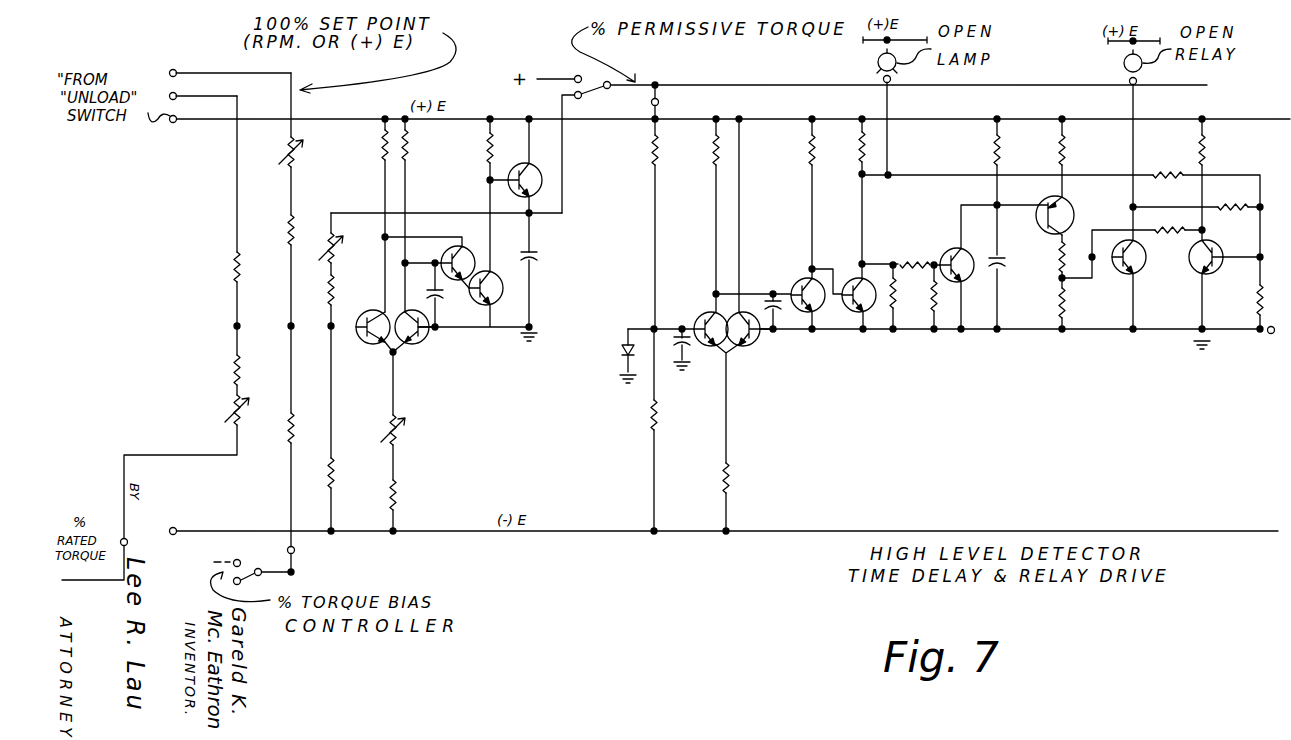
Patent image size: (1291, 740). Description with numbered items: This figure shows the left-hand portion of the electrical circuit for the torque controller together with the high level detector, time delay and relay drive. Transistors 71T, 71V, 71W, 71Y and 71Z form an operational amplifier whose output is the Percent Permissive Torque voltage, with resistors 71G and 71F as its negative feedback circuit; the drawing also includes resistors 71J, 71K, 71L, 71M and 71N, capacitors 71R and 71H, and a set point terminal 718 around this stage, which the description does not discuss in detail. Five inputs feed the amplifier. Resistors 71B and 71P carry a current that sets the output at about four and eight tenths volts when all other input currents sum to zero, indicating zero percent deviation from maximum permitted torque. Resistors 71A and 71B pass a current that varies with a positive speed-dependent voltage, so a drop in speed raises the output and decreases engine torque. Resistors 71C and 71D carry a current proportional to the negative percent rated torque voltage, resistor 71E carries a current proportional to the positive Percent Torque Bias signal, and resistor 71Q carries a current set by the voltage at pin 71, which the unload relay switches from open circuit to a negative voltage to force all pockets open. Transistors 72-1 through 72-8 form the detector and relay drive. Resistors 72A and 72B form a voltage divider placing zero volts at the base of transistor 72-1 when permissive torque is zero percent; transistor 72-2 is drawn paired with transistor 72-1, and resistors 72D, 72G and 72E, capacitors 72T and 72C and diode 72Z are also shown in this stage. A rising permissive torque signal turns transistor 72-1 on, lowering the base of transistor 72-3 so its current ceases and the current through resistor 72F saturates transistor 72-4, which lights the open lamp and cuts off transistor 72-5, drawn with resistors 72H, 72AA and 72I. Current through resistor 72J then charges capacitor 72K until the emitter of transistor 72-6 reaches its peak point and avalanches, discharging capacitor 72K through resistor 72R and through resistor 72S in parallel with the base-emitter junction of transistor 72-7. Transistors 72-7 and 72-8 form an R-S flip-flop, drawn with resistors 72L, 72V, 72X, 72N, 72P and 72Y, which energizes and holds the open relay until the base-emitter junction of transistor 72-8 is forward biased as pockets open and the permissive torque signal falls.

The set point input terminal 718 is at (180, 70).
The pin 71 is at (178, 97).
The resistor 71A is at (307, 153).
The resistor 71B is at (280, 230).
The resistor 71Q is at (234, 278).
The resistor 71D is at (232, 381).
The resistor 71C is at (230, 424).
The resistor 71E is at (275, 429).
The resistor 71G is at (365, 242).
The resistor 71F is at (354, 293).
The resistor 71P is at (352, 478).
The resistor 71J is at (373, 144).
The resistor 71K is at (410, 158).
The resistor 71L is at (480, 149).
The transistor 71Z is at (544, 187).
The transistor 71W is at (478, 247).
The transistor 71Y is at (504, 300).
The capacitor 71R is at (446, 292).
The capacitor 71H is at (540, 260).
The transistor 71T is at (362, 342).
The transistor 71V is at (450, 349).
The variable resistor 71M is at (416, 440).
The resistor 71N is at (418, 499).
The resistor 72A is at (642, 154).
The resistor 72D is at (706, 153).
The resistor 72F is at (798, 160).
The resistor 72G is at (852, 156).
The resistor 72B is at (648, 430).
The resistor 72E is at (733, 488).
The zener diode 72Z is at (618, 344).
The capacitor 72C is at (688, 365).
The transistor 72-1 is at (696, 313).
The transistor 72-2 is at (756, 345).
The capacitor 72T is at (760, 299).
The transistor 72-3 is at (817, 326).
The transistor 72-4 is at (877, 322).
The resistor 72H is at (908, 293).
The resistor 72AA is at (932, 312).
The resistor 72I is at (908, 250).
The transistor 72-5 is at (950, 242).
The resistor 72J is at (1002, 160).
The capacitor 72K is at (1006, 274).
The resistor 72L is at (1070, 160).
The transistor 72-6 is at (1076, 216).
The resistor 72V is at (1052, 254).
The resistor 72X is at (1068, 312).
The transistor 72-7 is at (1142, 266).
The resistor 72N is at (1168, 230).
The resistor 72P is at (1164, 178).
The resistor 72R is at (1234, 207).
The resistor 72Y is at (1190, 158).
The transistor 72-8 is at (1222, 270).
The resistor 72S is at (1254, 314).